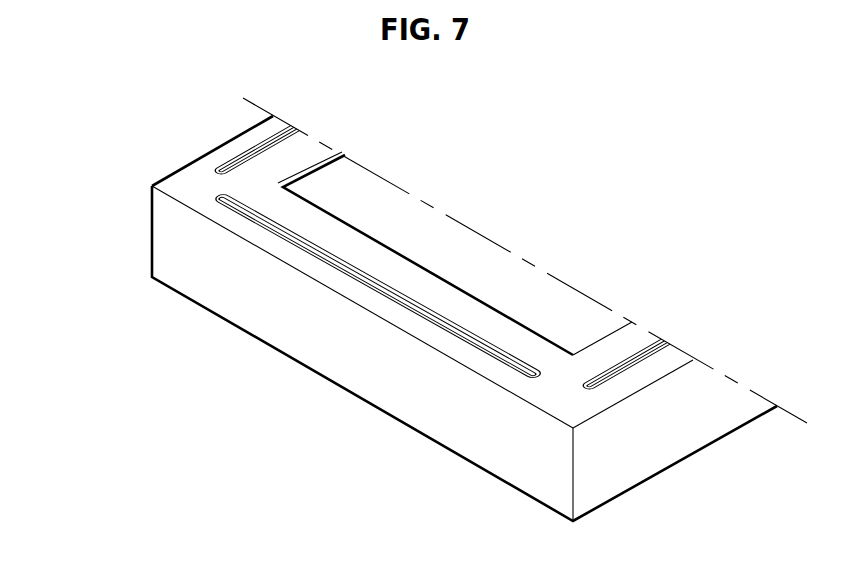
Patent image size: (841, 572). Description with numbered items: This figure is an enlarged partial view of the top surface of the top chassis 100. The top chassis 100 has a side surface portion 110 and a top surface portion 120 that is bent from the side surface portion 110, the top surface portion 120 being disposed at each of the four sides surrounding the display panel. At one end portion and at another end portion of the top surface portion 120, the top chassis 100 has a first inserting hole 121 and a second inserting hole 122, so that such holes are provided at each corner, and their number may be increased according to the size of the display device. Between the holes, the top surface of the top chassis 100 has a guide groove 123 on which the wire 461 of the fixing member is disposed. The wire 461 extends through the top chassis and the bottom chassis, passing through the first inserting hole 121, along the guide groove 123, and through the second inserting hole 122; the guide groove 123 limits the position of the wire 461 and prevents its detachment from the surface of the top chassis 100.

The top chassis 100 is at (87, 170).
The side surface portion 110 is at (173, 240).
The top surface portion 120 is at (183, 167).
The first inserting hole 121 is at (189, 184).
The second inserting hole 122 is at (220, 173).
The guide groove 123 is at (452, 328).
The wire 461 is at (507, 363).